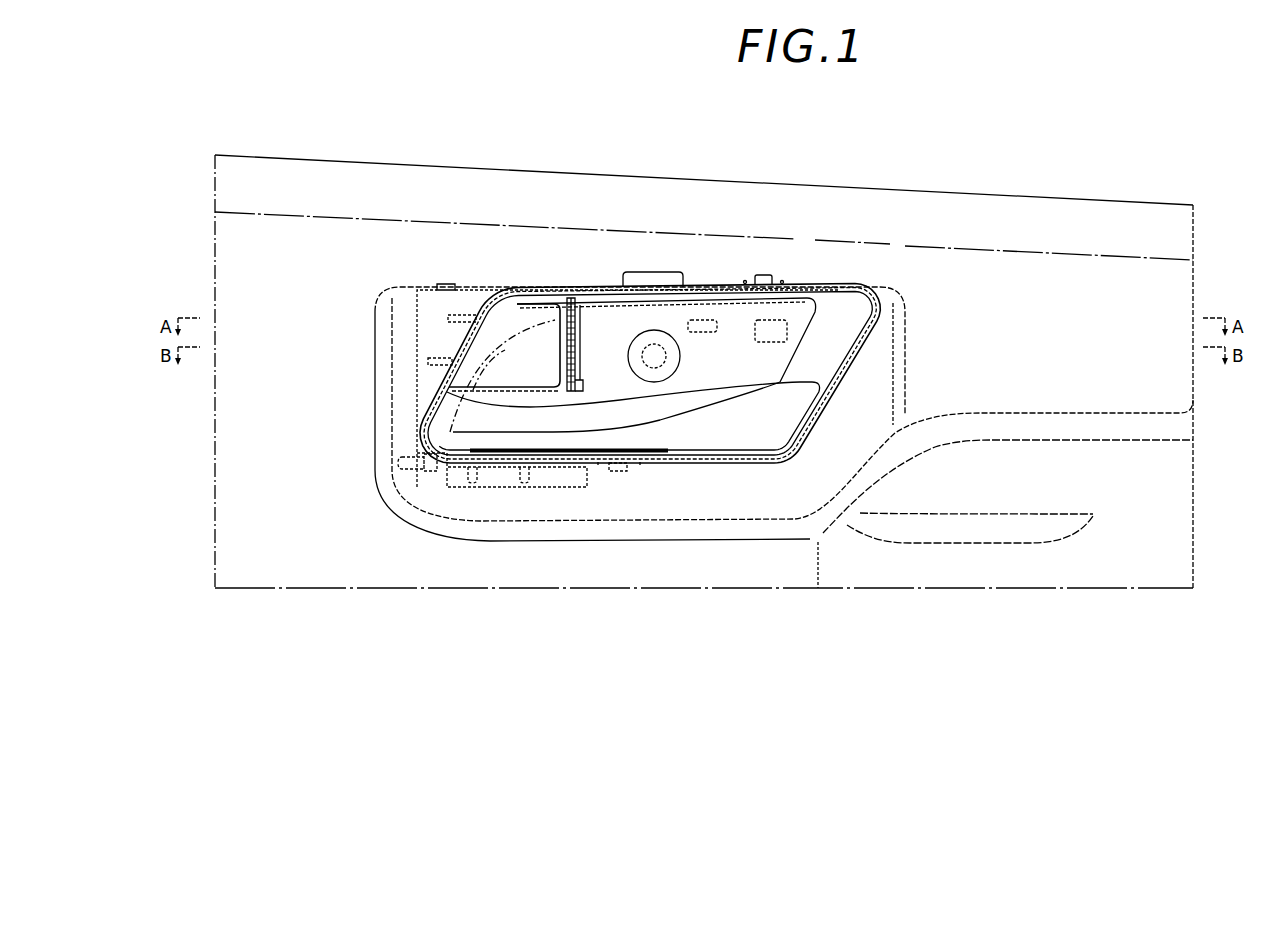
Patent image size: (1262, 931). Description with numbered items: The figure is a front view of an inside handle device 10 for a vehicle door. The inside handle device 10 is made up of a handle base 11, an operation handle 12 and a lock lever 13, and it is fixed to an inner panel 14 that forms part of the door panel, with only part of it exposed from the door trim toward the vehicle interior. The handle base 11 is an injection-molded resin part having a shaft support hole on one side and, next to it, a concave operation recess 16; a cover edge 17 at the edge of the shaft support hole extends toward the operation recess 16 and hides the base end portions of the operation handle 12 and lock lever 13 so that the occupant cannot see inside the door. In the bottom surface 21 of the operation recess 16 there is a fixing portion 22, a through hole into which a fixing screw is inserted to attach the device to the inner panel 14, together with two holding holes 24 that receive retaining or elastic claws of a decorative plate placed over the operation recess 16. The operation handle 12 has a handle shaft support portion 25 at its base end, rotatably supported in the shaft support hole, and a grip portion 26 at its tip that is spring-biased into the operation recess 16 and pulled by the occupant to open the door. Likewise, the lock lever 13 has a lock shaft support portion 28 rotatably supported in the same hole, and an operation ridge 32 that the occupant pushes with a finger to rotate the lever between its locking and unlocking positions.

The inside handle device 10 is at (869, 280).
The handle base 11 is at (815, 429).
The operation handle 12 is at (622, 446).
The lock lever 13 is at (496, 325).
The inner panel 14 is at (310, 186).
The operation recess 16 is at (750, 366).
The cover edge 17 is at (446, 372).
The bottom surface 21 is at (650, 316).
The fixing portion 22 is at (628, 357).
The holding holes 24 is at (708, 327).
The handle shaft support portion 25 is at (437, 415).
The grip portion 26 is at (742, 432).
The lock shaft support portion 28 is at (456, 349).
The operation ridge 32 is at (572, 316).